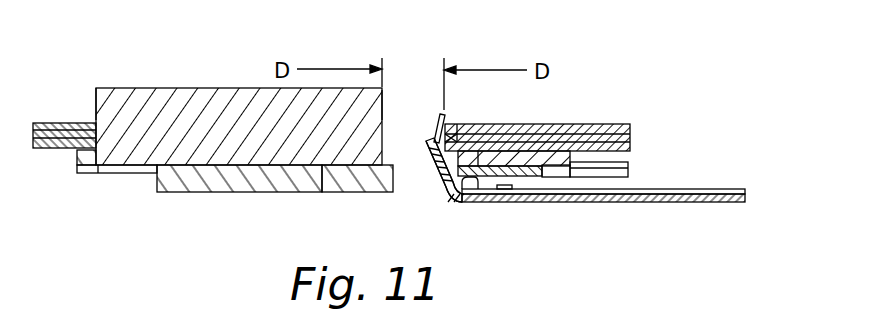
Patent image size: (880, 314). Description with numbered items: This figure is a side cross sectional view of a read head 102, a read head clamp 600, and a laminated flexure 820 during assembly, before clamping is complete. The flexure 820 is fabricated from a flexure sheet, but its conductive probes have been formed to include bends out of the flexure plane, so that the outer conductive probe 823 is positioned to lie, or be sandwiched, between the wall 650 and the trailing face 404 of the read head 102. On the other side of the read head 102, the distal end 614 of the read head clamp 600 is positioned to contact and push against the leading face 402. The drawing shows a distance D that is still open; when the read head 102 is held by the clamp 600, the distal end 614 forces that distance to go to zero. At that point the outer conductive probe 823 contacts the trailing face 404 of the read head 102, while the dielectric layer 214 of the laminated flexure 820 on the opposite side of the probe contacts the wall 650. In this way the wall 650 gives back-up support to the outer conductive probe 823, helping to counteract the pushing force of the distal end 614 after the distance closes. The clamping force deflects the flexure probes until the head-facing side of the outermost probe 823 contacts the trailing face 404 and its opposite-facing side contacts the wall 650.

The read head 102 is at (172, 87).
The leading face 402 is at (95, 95).
The trailing face 404 is at (383, 98).
The distal end 614 is at (50, 150).
The read head clamp 600 is at (550, 126).
The wall 650 is at (432, 144).
The outer conductive probe 823 is at (436, 168).
The laminated flexure 820 is at (748, 188).
The dielectric layer 214 is at (466, 190).